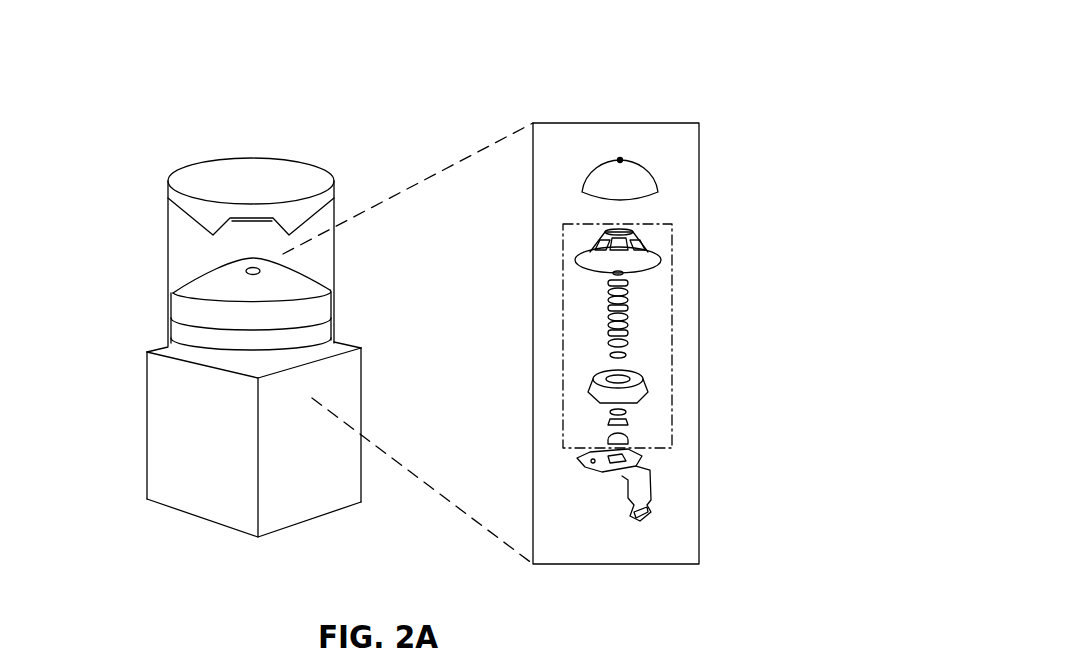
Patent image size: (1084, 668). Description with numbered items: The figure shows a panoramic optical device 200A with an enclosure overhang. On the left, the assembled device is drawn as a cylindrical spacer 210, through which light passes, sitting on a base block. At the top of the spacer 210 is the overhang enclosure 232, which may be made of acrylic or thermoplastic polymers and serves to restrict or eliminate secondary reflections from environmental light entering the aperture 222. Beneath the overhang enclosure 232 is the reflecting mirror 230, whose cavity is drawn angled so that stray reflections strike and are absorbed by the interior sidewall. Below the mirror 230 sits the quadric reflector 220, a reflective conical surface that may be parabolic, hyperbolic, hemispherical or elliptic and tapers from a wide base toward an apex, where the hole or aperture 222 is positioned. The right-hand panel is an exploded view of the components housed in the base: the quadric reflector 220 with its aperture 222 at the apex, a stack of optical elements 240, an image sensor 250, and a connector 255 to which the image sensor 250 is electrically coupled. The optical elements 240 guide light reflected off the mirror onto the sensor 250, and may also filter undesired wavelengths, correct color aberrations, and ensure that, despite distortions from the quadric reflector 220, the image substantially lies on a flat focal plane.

The camera assembly 200A is at (863, 40).
The spacer 210 is at (168, 243).
The overhang enclosure 232 is at (230, 159).
The reflecting mirror 230 is at (248, 218).
The quadric reflector 220 is at (303, 280).
The aperture 222 is at (620, 160).
The optical elements 240 is at (563, 283).
The image sensor 250 is at (605, 472).
The connector 255 is at (615, 511).